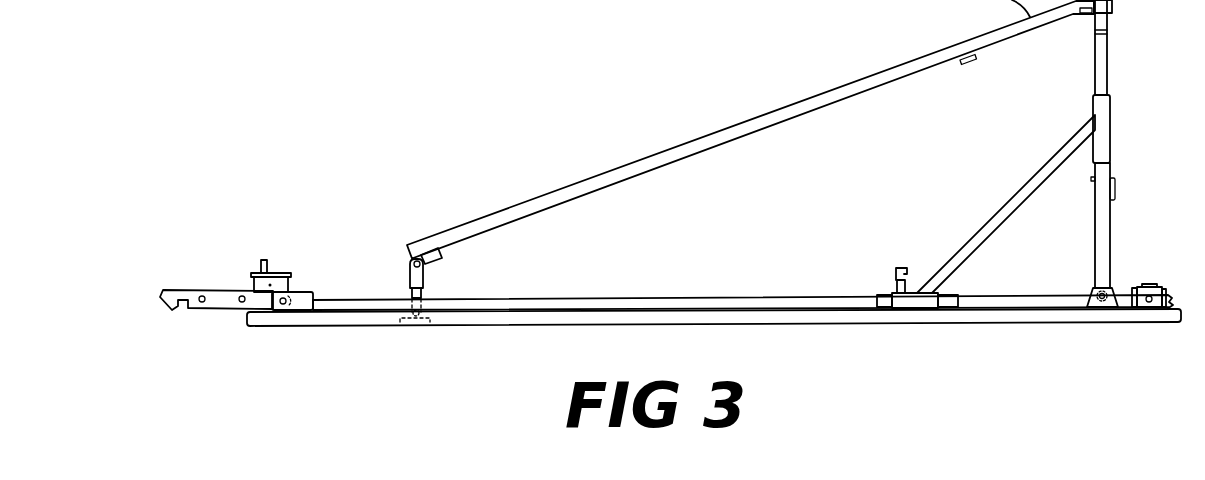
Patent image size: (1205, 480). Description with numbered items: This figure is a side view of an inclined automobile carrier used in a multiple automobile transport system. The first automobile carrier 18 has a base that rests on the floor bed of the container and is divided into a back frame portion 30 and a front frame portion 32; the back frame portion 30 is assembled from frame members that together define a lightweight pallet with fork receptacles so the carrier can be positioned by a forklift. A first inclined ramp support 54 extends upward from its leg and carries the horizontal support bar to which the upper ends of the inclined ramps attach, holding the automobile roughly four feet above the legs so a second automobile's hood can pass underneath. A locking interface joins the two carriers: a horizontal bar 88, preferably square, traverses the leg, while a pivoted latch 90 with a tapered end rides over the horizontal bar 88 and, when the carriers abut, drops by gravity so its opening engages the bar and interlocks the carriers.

The first automobile carrier 18 is at (1130, 323).
The back frame portion 30 is at (912, 325).
The front frame portion 32 is at (360, 326).
The first inclined ramp support 54 is at (1107, 63).
The horizontal bar 88 is at (1150, 284).
The latch 90 is at (207, 290).